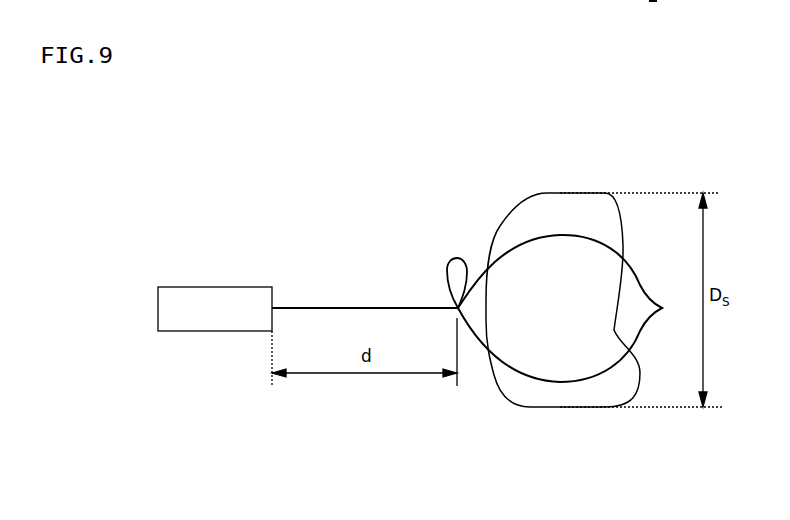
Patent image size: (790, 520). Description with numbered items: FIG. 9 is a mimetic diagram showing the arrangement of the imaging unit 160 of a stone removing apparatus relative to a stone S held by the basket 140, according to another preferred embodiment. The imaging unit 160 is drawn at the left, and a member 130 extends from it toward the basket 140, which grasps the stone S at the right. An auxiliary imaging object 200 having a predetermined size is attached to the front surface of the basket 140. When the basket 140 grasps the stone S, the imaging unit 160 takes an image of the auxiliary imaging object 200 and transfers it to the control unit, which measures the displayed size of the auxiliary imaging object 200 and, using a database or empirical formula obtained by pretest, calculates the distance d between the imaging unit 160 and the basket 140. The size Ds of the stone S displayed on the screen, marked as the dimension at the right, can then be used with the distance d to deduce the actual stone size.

The imaging unit 160 is at (240, 287).
The laser beam 130 is at (378, 308).
The auxiliary imaging object 200 is at (458, 258).
The basket 140 is at (538, 237).
The stone S is at (538, 408).